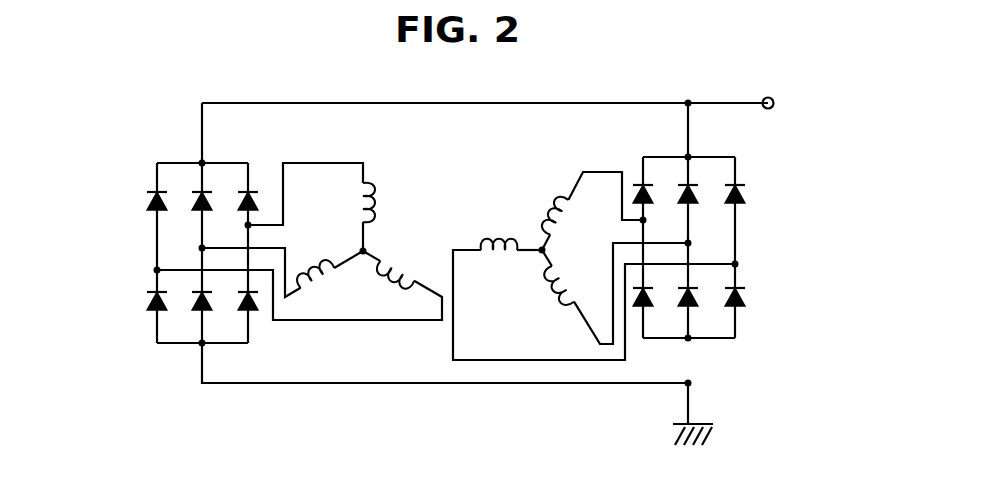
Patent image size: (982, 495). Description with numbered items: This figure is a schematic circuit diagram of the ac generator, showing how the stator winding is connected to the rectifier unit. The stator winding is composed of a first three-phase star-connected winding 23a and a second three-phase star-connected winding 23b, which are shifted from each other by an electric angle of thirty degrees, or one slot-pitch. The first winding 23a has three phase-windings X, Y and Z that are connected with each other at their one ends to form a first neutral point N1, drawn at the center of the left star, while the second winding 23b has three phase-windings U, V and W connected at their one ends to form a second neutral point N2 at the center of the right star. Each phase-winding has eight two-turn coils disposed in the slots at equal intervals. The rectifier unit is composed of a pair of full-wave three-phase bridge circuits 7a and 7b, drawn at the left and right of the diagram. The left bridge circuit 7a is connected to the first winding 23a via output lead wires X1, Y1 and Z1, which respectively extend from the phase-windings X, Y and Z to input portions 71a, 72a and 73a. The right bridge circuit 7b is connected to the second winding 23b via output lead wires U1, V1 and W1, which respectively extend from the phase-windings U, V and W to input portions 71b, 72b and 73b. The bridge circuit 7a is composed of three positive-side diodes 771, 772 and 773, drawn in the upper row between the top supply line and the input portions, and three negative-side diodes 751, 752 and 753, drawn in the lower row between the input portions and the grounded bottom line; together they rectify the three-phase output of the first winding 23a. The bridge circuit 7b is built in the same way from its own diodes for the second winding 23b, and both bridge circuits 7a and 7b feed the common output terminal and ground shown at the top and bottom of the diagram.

The full-wave three-phase bridge circuit 7a is at (147, 372).
The full-wave three-phase bridge circuit 7b is at (770, 342).
The input portion 71a is at (247, 223).
The input portion 72a is at (200, 247).
The input portion 73a is at (157, 271).
The input portion 71b is at (645, 220).
The input portion 72b is at (689, 242).
The input portion 73b is at (736, 264).
The positive-side diode 771 is at (247, 207).
The positive-side diode 772 is at (155, 207).
The positive-side diode 773 is at (199, 207).
The negative-side diode 751 is at (254, 305).
The negative-side diode 752 is at (156, 311).
The negative-side diode 753 is at (208, 306).
The first three-phase star-connected winding 23a is at (389, 245).
The second three-phase star-connected winding 23b is at (535, 205).
The phase-winding X is at (356, 217).
The phase-winding Y is at (395, 271).
The phase-winding Z is at (328, 260).
The phase-winding U is at (563, 222).
The phase-winding V is at (568, 279).
The phase-winding W is at (511, 268).
The output lead wire X1 is at (268, 222).
The output lead wire Y1 is at (178, 271).
The output lead wire Z1 is at (218, 248).
The output lead wire U1 is at (640, 218).
The output lead wire V1 is at (637, 242).
The output lead wire W1 is at (710, 266).
The first neutral point N1 is at (365, 258).
The second neutral point N2 is at (541, 256).